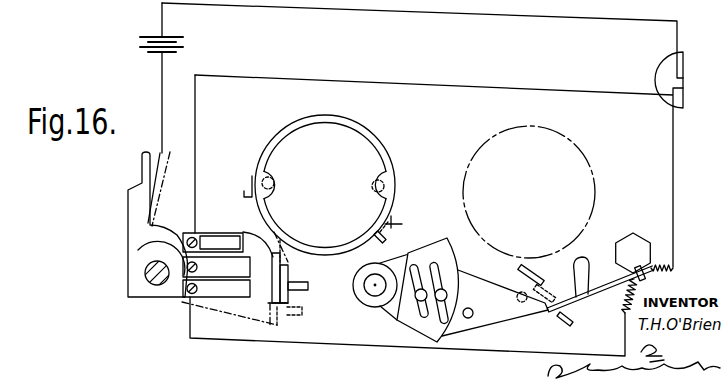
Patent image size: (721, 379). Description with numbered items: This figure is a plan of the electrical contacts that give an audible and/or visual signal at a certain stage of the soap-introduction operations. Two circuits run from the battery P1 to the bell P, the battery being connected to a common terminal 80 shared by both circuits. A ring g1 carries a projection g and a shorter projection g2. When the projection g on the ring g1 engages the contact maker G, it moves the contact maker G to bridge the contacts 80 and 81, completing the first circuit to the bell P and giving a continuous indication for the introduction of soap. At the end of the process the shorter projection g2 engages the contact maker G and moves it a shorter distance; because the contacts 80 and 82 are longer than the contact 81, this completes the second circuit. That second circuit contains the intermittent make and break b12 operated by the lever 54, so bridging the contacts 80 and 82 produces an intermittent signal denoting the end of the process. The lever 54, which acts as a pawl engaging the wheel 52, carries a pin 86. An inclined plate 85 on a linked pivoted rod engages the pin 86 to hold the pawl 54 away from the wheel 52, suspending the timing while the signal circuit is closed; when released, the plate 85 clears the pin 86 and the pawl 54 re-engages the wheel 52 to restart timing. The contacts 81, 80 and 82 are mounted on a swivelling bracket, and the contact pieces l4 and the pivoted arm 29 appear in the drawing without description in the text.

The battery P1 is at (175, 38).
The bell P is at (675, 97).
The ring g1 is at (368, 139).
The shorter projection g2 is at (247, 191).
The projection g is at (393, 218).
The contact pieces l4 is at (372, 187).
The wheel 52 is at (495, 137).
The lever 54 is at (473, 287).
The pivoted arm 29 is at (153, 283).
The contact 81 is at (208, 244).
The common terminal 80 is at (217, 268).
The contact 82 is at (232, 290).
The contact maker G is at (260, 293).
The pin 86 is at (525, 302).
The inclined plate 85 is at (575, 315).
The intermittent make and break b12 is at (600, 289).